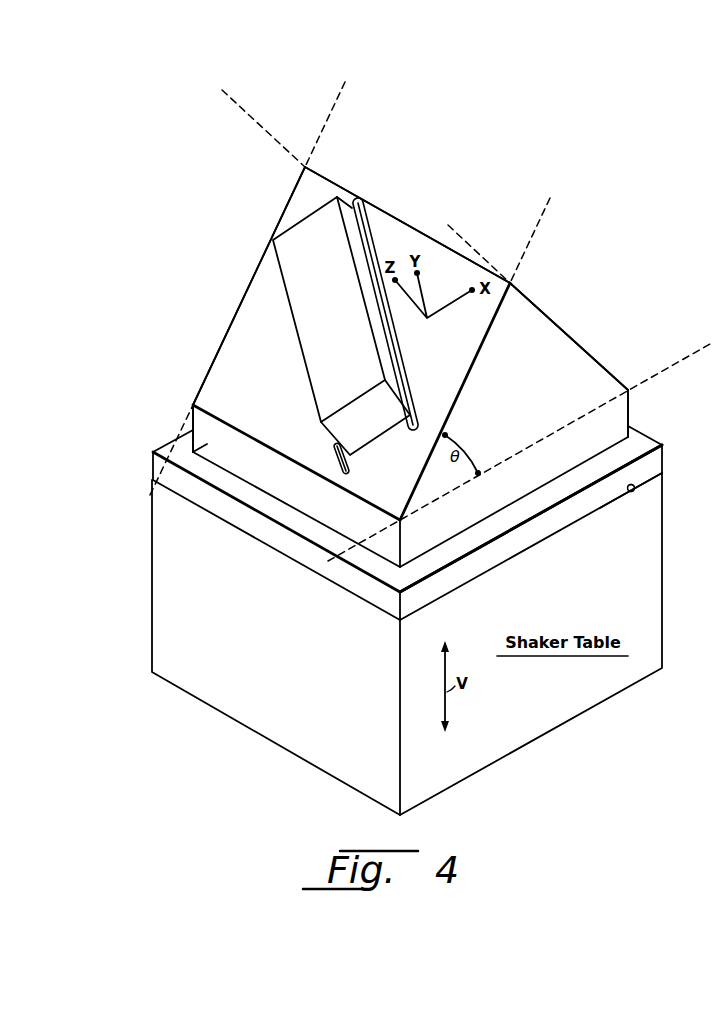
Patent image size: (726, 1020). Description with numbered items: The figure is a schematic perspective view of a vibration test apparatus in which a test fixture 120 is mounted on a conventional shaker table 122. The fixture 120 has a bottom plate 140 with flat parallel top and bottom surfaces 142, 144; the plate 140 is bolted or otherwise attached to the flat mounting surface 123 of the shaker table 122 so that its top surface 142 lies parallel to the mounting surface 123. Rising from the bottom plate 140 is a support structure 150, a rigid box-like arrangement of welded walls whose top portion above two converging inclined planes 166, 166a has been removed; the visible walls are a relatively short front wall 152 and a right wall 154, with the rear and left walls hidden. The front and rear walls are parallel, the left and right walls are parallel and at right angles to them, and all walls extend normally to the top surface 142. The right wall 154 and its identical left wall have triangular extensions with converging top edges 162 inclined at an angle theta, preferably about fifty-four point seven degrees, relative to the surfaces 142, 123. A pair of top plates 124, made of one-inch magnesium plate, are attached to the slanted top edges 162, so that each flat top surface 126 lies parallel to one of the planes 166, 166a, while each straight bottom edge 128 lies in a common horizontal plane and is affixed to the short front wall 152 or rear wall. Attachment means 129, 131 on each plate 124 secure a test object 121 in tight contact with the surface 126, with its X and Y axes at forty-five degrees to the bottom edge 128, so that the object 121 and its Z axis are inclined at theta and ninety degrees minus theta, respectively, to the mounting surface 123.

The test fixture 120 is at (565, 267).
The test object 121 is at (318, 372).
The shaker table 122 is at (662, 625).
The mounting surface 123 is at (636, 491).
The top plate 124 is at (229, 333).
The top surface 126 is at (245, 401).
The bottom edge 128 is at (201, 420).
The attachment means 129 is at (335, 452).
The attachment means 131 is at (405, 385).
The bottom plate 140 is at (663, 453).
The top surface 142 is at (638, 446).
The bottom surface 144 is at (635, 489).
The support structure 150 is at (614, 412).
The front wall 152 is at (158, 459).
The right wall 154 is at (620, 418).
The top edge 162 is at (556, 323).
The inclined plane 166 is at (342, 92).
The inclined plane 166a is at (268, 132).